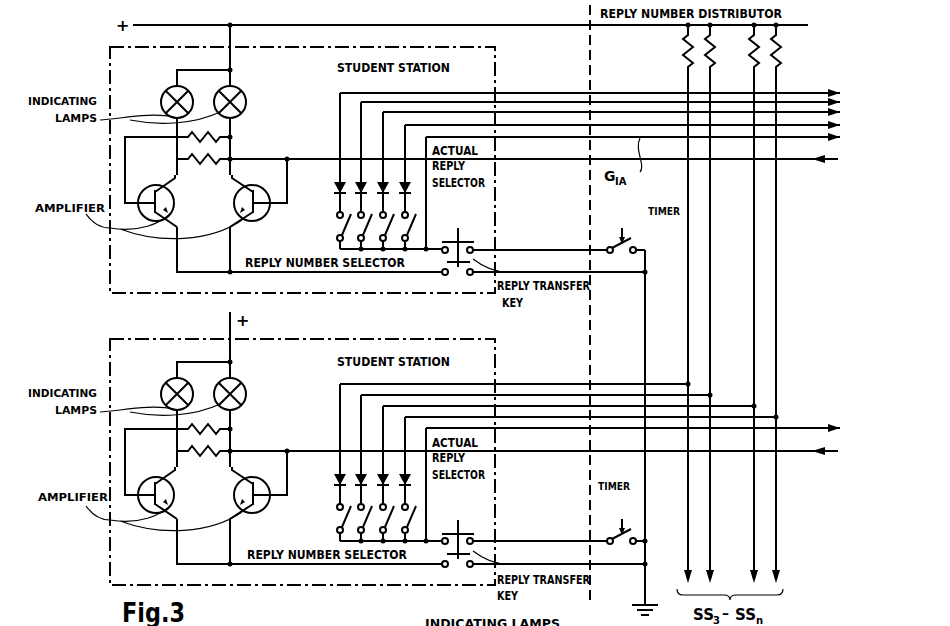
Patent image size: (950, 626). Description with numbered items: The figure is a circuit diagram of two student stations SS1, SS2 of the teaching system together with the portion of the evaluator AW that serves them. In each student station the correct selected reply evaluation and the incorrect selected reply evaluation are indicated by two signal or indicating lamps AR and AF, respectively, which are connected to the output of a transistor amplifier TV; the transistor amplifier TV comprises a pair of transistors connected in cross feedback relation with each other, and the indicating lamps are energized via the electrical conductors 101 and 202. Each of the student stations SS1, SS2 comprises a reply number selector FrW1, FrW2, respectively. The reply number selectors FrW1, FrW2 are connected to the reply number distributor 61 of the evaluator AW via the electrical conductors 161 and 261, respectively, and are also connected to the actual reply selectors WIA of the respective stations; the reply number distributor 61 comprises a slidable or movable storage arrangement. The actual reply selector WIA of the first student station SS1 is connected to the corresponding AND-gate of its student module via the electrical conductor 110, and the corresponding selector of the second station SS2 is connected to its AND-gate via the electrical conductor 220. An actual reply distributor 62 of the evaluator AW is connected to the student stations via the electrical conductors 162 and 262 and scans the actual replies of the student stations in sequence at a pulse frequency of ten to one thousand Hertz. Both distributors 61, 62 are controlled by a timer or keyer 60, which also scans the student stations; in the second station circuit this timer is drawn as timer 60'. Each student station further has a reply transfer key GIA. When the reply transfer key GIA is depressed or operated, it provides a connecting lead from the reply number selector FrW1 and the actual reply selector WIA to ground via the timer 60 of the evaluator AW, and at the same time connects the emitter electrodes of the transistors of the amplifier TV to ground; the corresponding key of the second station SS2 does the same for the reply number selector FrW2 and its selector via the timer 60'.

The reply number distributor 61 is at (686, 57).
The actual reply distributor 62 is at (780, 57).
The electrical conductor 161 is at (517, 102).
The electrical conductor 162 is at (563, 125).
The electrical conductor 101 is at (535, 160).
The electrical conductor 110 is at (562, 138).
The timer 60 is at (631, 239).
The electrical conductor 261 is at (513, 395).
The electrical conductor 262 is at (557, 406).
The electrical conductor 202 is at (532, 452).
The electrical conductor 220 is at (559, 429).
The timer 60' is at (621, 522).
The indicating lamp AF is at (166, 99).
The indicating lamp AR is at (241, 99).
The transistor amplifier TV is at (204, 223).
The student station SS1 is at (313, 106).
The student station SS2 is at (317, 425).
The reply number selector FrW1 is at (352, 228).
The reply number selector FrW2 is at (350, 520).
The reply transfer key GIA is at (543, 248).
The actual reply selector WIA is at (436, 211).
The evaluator AW is at (816, 323).